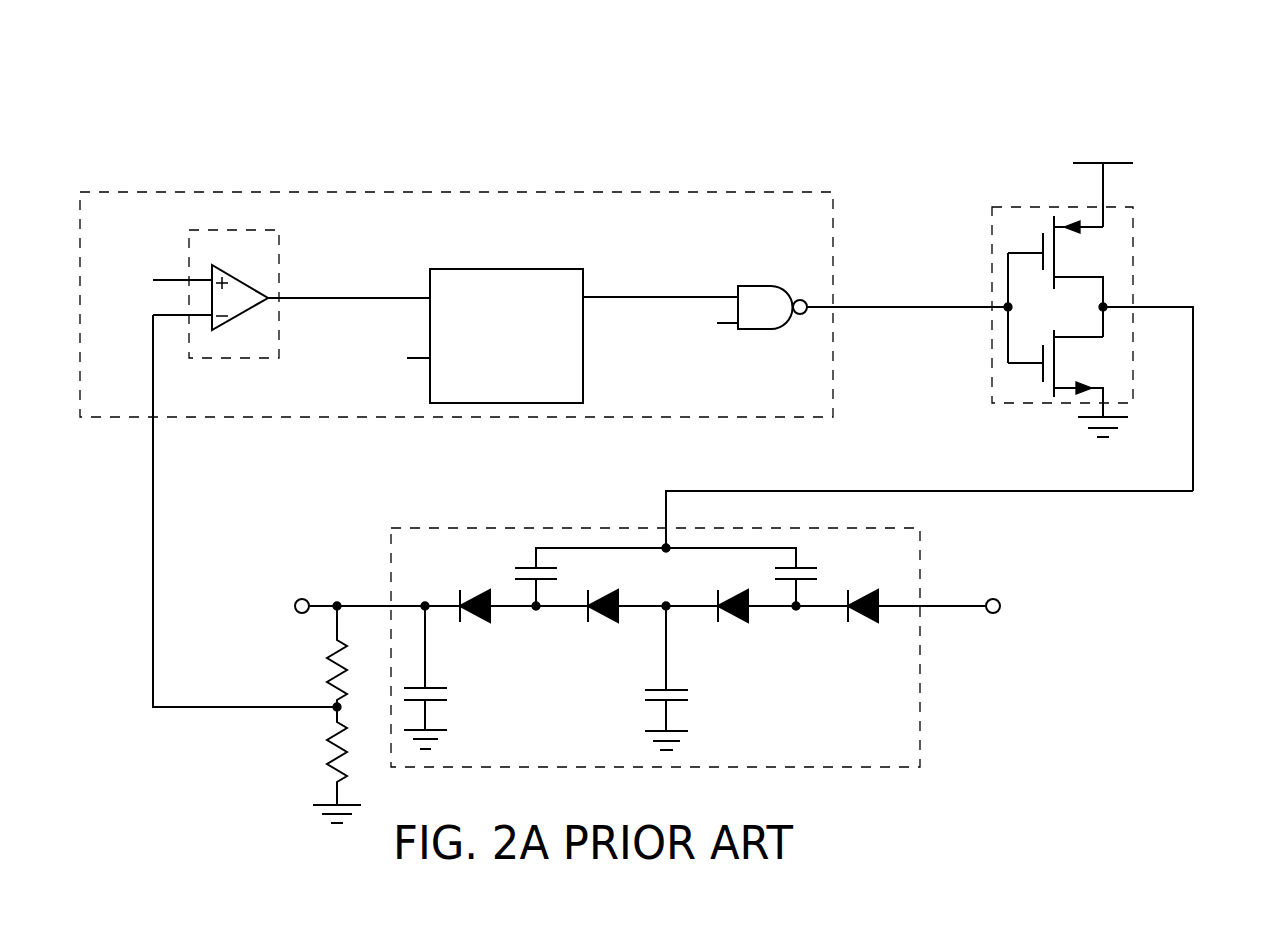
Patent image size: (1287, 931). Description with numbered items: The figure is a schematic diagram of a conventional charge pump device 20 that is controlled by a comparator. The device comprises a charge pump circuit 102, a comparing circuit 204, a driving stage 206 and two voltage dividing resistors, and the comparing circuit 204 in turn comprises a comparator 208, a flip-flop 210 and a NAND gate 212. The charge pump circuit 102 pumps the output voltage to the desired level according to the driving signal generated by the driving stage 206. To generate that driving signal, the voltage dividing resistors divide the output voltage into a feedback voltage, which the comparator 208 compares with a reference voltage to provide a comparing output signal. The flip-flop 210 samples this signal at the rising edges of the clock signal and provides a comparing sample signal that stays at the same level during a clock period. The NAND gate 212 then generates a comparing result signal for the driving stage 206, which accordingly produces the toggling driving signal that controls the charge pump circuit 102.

The charge pump device 20 is at (1163, 93).
The charge pump circuit 102 is at (920, 563).
The comparing circuit 204 is at (790, 192).
The driving stage 206 is at (1133, 240).
The comparator 208 is at (262, 230).
The flip-flop 210 is at (535, 269).
The NAND gate 212 is at (757, 286).